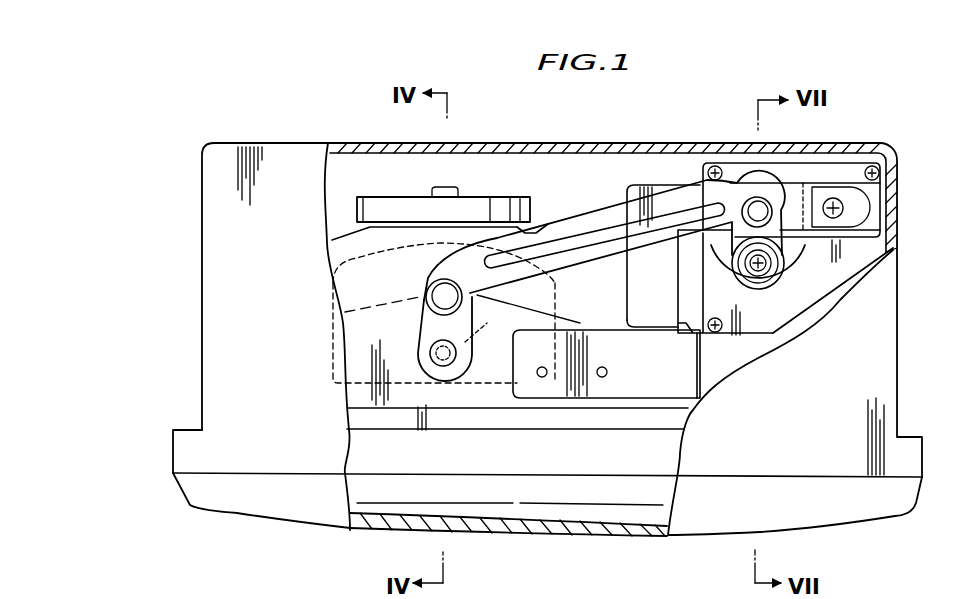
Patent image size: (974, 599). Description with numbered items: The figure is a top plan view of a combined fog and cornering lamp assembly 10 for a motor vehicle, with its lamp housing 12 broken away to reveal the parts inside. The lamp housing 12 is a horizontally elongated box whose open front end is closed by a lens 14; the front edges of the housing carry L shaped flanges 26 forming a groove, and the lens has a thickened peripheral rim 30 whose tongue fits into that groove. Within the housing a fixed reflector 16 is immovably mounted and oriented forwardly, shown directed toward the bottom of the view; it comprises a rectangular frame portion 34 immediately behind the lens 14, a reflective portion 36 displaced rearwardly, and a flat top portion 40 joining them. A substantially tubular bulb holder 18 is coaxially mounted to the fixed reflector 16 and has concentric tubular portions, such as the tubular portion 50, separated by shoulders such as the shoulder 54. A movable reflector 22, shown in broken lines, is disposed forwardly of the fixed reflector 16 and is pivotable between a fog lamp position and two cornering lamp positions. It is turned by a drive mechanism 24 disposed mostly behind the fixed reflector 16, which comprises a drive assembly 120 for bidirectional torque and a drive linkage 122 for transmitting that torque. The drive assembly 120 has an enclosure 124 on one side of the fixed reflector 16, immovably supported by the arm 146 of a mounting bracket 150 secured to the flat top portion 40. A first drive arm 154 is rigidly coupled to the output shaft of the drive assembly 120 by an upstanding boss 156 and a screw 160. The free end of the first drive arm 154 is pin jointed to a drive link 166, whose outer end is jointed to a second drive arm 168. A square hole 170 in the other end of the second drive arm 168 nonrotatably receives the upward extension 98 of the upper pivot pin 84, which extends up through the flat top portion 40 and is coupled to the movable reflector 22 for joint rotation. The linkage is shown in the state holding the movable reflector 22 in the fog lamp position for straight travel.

The lamp assembly 10 is at (893, 120).
The lamp housing 12 is at (898, 267).
The lens 14 is at (573, 540).
The fixed reflector 16 is at (352, 228).
The bulb holder 18 is at (402, 194).
The movable reflector 22 is at (330, 263).
The drive mechanism 24 is at (702, 278).
The L shaped flanges 26 is at (917, 447).
The thickened peripheral rim 30 is at (910, 493).
The rectangular frame portion 34 is at (557, 425).
The reflective portion 36 is at (333, 243).
The flat top portion 40 is at (353, 323).
The tubular portion 50 is at (498, 200).
The shoulder 54 is at (532, 225).
The upper pivot pin 84 is at (434, 363).
The upward extension 98 is at (450, 366).
The drive assembly 120 is at (890, 273).
The drive linkage 122 is at (588, 270).
The enclosure 124 is at (748, 335).
The arm 146 is at (790, 193).
The mounting bracket 150 is at (692, 384).
The first drive arm 154 is at (851, 280).
The boss 156 is at (780, 246).
The screw 160 is at (772, 270).
The drive link 166 is at (601, 220).
The second drive arm 168 is at (423, 333).
The hole 170 is at (522, 318).